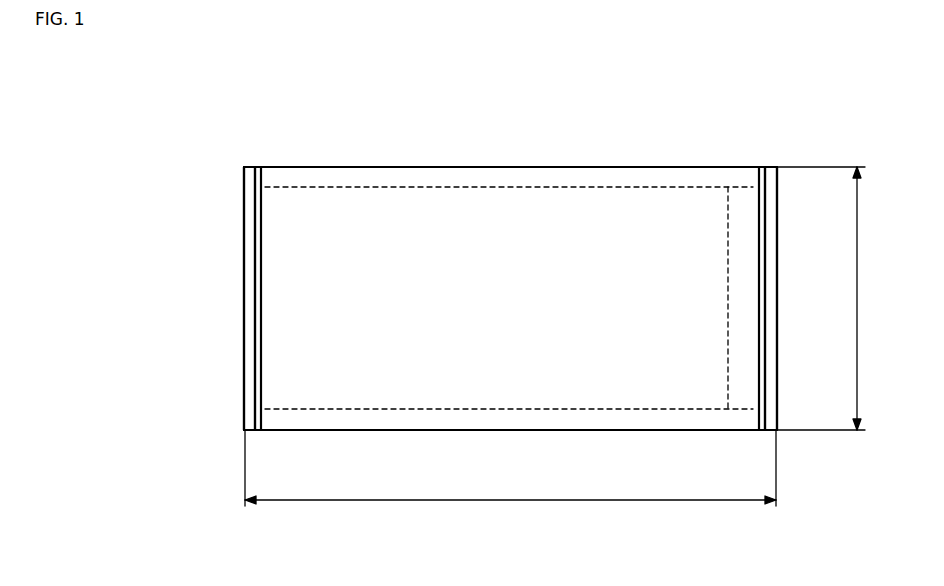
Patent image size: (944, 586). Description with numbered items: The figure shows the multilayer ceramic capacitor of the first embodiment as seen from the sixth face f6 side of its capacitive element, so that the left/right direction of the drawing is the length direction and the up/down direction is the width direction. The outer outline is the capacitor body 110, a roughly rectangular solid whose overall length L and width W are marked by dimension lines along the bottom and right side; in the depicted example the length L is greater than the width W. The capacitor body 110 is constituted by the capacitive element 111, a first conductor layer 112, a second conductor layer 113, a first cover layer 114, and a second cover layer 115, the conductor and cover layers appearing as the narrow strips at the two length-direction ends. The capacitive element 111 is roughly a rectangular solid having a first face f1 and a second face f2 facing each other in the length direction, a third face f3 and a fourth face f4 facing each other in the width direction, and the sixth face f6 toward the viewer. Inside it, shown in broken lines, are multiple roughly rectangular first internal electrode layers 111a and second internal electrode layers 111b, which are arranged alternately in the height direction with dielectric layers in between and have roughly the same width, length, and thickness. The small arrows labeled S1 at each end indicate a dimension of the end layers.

The capacitor body 110 is at (252, 167).
The capacitive element 111 is at (502, 167).
The first internal electrode layer 111a is at (604, 205).
The second internal electrode layer 111b is at (745, 205).
The first conductor layer 112 is at (257, 226).
The second conductor layer 113 is at (763, 226).
The first cover layer 114 is at (250, 261).
The second cover layer 115 is at (770, 258).
The first face f1 is at (262, 181).
The second face f2 is at (759, 181).
The third face f3 is at (458, 430).
The fourth face f4 is at (458, 167).
The sixth face f6 is at (545, 235).
The thickness of external electrode S1 is at (240, 296).
The width W is at (831, 298).
The length L is at (510, 480).